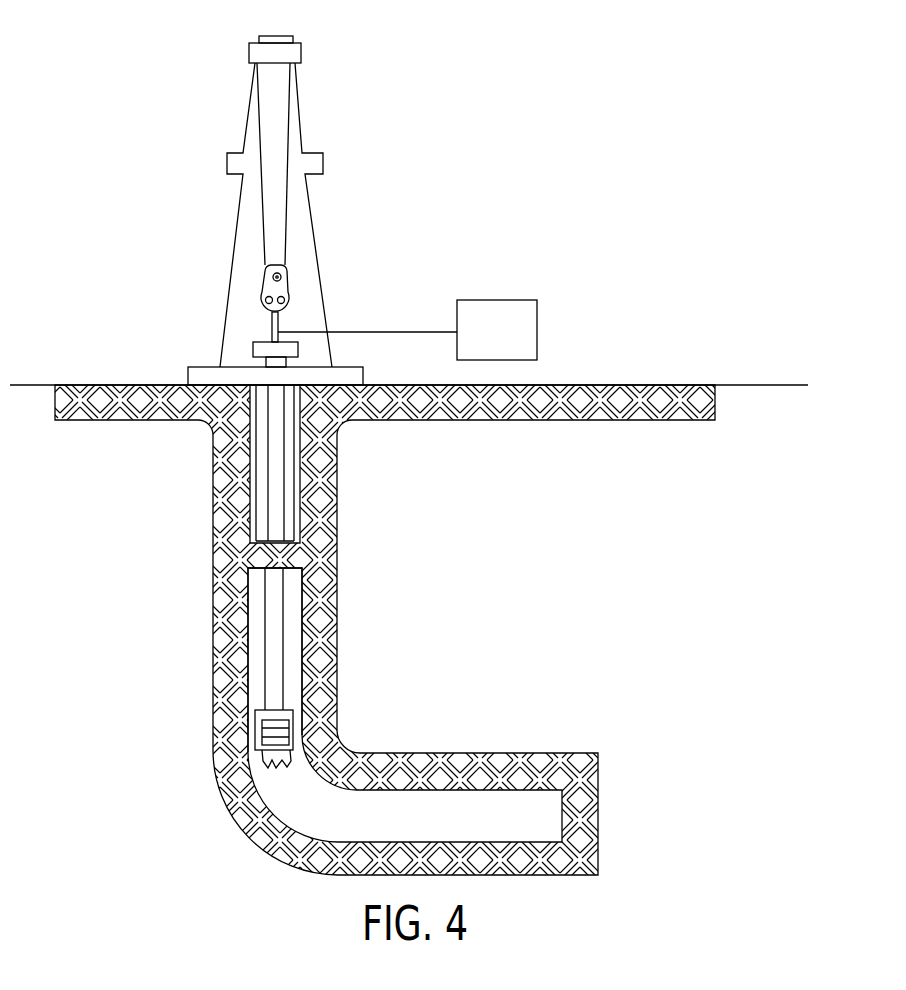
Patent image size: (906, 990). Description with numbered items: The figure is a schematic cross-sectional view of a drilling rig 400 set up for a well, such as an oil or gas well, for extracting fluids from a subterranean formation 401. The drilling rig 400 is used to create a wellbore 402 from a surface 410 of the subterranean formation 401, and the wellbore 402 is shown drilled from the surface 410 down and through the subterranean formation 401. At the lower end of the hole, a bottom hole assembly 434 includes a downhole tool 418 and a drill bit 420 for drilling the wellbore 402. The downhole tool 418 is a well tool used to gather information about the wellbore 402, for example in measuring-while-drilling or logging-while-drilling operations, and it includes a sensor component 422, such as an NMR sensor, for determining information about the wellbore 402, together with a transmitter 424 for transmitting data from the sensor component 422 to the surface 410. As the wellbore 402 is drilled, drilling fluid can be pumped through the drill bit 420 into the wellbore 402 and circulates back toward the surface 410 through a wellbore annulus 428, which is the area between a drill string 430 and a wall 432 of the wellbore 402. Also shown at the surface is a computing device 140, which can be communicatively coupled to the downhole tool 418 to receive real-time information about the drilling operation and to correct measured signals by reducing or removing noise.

The drilling rig 400 is at (97, 97).
The computing device 140 is at (495, 300).
The surface 410 is at (567, 385).
The subterranean formation 401 is at (225, 648).
The wellbore annulus 428 is at (257, 623).
The wellbore 402 is at (302, 617).
The drill string 430 is at (290, 662).
The wall 432 is at (247, 688).
The downhole tool 418 is at (300, 720).
The bottom hole assembly 434 is at (137, 678).
The transmitter 424 is at (268, 723).
The sensor component 422 is at (282, 740).
The drill bit 420 is at (262, 762).